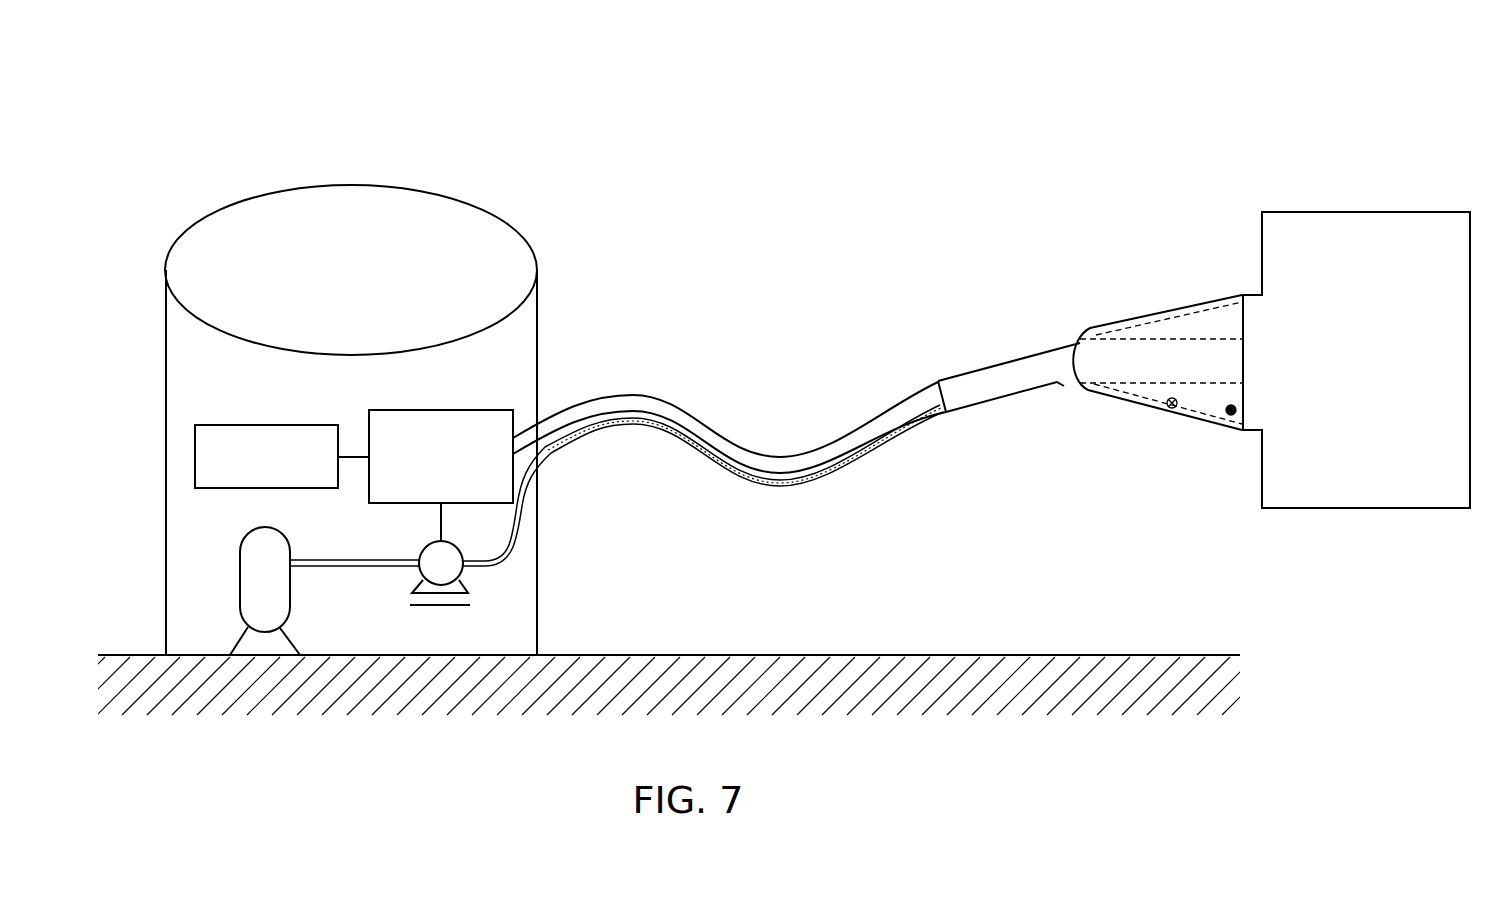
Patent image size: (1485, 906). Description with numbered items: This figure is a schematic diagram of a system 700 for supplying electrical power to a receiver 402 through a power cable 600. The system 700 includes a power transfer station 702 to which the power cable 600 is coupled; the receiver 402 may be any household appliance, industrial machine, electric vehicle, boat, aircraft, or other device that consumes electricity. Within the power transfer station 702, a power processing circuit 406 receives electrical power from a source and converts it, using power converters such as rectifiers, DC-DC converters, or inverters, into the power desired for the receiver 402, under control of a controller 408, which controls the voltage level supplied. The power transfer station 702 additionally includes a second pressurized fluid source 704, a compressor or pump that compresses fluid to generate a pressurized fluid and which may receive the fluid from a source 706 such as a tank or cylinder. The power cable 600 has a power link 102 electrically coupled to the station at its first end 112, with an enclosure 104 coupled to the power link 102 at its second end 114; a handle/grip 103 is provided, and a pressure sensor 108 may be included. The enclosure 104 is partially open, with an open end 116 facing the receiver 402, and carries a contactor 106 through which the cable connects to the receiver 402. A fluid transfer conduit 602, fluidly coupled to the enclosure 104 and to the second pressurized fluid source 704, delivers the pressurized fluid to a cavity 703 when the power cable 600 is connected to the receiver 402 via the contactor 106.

The system 700 is at (1240, 56).
The power transfer station 702 is at (438, 190).
The controller 408 is at (216, 425).
The power processing circuit 406 is at (478, 410).
The second pressurized fluid source 704 is at (465, 575).
The source 706 is at (290, 542).
The first end 112 is at (553, 425).
The power link 102 is at (643, 405).
The fluid transfer conduit 602 is at (757, 480).
The power cable 600 is at (831, 346).
The second end 114 is at (927, 395).
The handle/grip 103 is at (978, 375).
The enclosure 104 is at (1093, 325).
The contactor 106 is at (1088, 368).
The cavity 703 is at (1185, 328).
The pressure sensor 108 is at (1228, 416).
The receiver 402 is at (1300, 214).
The open end 116 is at (1247, 323).